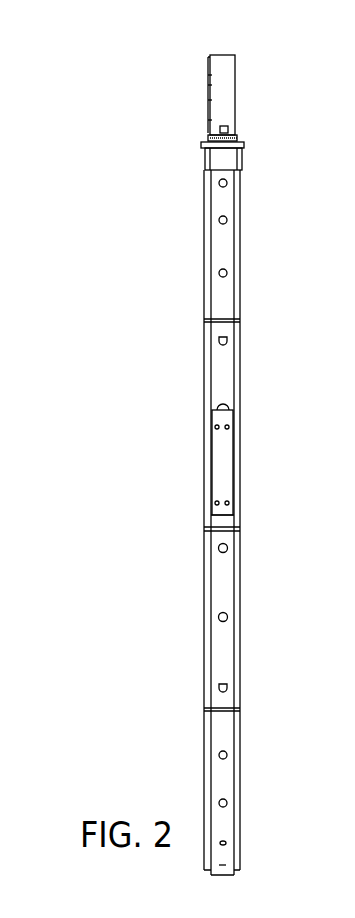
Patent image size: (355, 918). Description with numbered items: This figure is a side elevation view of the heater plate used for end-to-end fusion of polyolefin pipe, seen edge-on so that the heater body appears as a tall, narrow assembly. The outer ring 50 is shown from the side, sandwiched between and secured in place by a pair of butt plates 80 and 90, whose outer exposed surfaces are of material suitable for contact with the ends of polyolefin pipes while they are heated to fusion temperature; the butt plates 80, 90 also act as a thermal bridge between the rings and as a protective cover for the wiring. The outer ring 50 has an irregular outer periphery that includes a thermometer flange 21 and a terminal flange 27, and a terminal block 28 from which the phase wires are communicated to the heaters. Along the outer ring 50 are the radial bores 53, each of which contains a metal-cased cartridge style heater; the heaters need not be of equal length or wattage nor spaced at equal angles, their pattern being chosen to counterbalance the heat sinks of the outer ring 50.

The terminal block 28 is at (225, 92).
The terminal flange 27 is at (227, 162).
The butt plate 80 is at (205, 358).
The butt plate 90 is at (237, 360).
The thermometer flange 21 is at (222, 465).
The outer ring 50 is at (222, 583).
The radial bores 53 is at (226, 273).